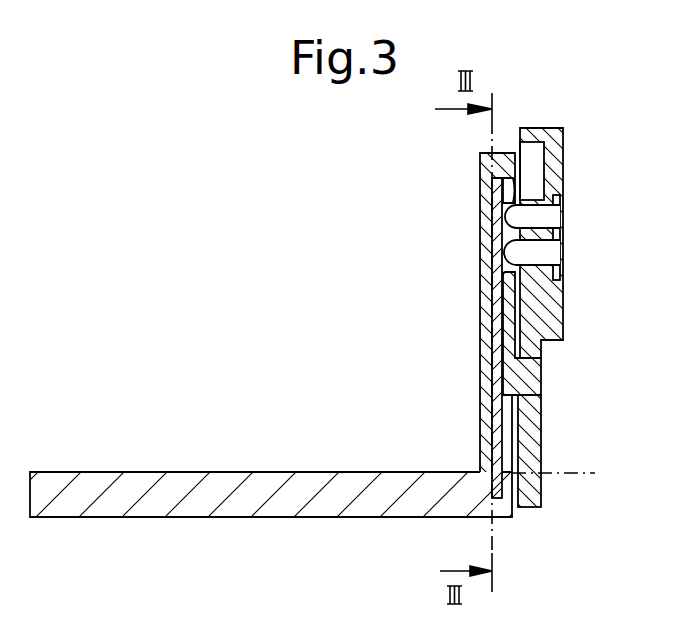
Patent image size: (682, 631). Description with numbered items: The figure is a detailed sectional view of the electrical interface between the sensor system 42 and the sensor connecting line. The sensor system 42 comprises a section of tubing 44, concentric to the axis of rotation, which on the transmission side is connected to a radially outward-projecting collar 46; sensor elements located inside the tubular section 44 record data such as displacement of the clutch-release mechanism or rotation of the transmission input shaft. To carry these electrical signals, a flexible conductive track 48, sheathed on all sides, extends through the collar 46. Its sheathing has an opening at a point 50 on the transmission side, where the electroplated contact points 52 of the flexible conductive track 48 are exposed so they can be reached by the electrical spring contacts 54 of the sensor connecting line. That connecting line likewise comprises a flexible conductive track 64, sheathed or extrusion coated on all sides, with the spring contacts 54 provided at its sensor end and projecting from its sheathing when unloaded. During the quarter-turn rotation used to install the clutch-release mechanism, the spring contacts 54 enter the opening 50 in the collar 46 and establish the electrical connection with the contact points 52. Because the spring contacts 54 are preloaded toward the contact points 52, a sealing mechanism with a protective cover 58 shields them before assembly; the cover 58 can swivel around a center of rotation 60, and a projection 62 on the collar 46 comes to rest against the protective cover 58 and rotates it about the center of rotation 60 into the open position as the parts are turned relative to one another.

The sensor system 42 is at (303, 440).
The section of tubing 44 is at (273, 497).
The collar 46 is at (487, 298).
The flexible conductive track 48 is at (497, 378).
The opening 50 is at (504, 188).
The contact points 52 is at (566, 256).
The electrical spring contacts 54 is at (563, 166).
The protective cover 58 is at (543, 440).
The center of rotation 60 is at (567, 476).
The projection 62 is at (543, 386).
The flexible conductive track 64 is at (566, 212).